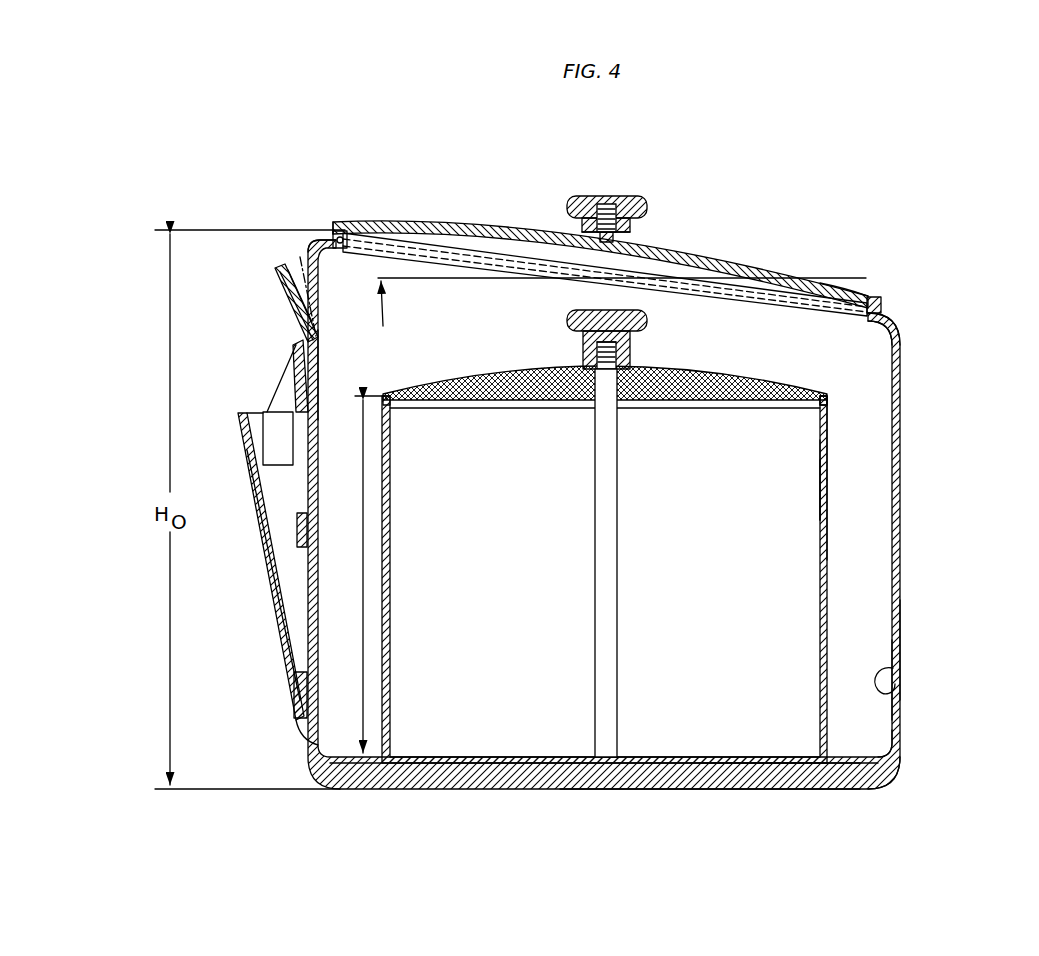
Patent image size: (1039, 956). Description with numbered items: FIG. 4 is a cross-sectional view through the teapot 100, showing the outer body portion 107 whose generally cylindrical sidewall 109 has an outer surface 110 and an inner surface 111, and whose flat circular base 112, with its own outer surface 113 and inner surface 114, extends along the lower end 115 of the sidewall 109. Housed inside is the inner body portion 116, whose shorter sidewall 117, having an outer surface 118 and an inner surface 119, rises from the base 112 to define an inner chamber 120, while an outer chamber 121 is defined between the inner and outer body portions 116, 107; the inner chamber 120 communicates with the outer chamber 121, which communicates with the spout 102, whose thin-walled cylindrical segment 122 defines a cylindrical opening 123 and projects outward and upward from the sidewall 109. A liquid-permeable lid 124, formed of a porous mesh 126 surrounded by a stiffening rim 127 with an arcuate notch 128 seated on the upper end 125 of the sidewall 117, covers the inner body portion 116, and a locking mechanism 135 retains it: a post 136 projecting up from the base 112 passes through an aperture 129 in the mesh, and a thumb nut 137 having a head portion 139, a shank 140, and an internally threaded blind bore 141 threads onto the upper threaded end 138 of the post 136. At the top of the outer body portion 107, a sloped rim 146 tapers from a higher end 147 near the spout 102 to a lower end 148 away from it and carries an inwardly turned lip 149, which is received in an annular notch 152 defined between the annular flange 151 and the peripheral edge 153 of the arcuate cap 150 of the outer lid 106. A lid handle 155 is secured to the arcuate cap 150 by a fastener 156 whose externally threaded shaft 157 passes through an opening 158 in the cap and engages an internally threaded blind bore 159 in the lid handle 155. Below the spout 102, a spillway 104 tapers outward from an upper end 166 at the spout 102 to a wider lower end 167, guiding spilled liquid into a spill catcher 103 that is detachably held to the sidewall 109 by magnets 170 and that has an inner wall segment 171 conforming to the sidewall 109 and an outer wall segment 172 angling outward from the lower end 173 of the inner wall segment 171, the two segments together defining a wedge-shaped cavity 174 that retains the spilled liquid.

The teapot 100 is at (251, 156).
The spout 102 is at (290, 267).
The spill catcher 103 is at (249, 504).
The spillway 104 is at (297, 350).
The outer lid 106 is at (773, 271).
The outer body portion 107 is at (912, 412).
The sidewall 109 is at (900, 651).
The outer surface 110 is at (903, 675).
The inner surface 111 is at (898, 698).
The base 112 is at (838, 780).
The outer surface 113 is at (699, 792).
The inner surface 114 is at (763, 762).
The lower end 115 is at (893, 757).
The inner body portion 116 is at (834, 448).
The sidewall 117 is at (826, 478).
The outer surface 118 is at (829, 515).
The inner surface 119 is at (820, 492).
The inner chamber 120 is at (658, 522).
The outer chamber 121 is at (447, 324).
The cylindrical segment 122 is at (290, 291).
The cylindrical opening 123 is at (297, 258).
The liquid-permeable lid 124 is at (605, 367).
The upper end 125 is at (829, 432).
The porous mesh 126 is at (322, 373).
The stiffening rim 127 is at (826, 406).
The arcuate notch 128 is at (389, 407).
The aperture 129 is at (627, 403).
The locking mechanism 135 is at (659, 519).
The post 136 is at (616, 645).
The thumb nut 137 is at (603, 312).
The upper threaded end 138 is at (592, 410).
The head portion 139 is at (646, 314).
The shank 140 is at (618, 345).
The internally threaded blind bore 141 is at (618, 356).
The sloped rim 146 is at (851, 296).
The higher end 147 is at (389, 243).
The lower end 148 is at (876, 300).
The inwardly turned lip 149 is at (880, 314).
The arcuate cap 150 is at (584, 219).
The annular flange 151 is at (338, 231).
The annular notch 152 is at (318, 240).
The peripheral edge 153 is at (320, 234).
The lid handle 155 is at (616, 173).
The fastener 156 is at (597, 238).
The externally threaded shaft 157 is at (630, 204).
The opening 158 is at (632, 243).
The internally threaded blind bore 159 is at (653, 222).
The upper end 166 is at (300, 311).
The lower end 167 is at (263, 443).
The magnets 170 is at (299, 531).
The inner wall segment 171 is at (298, 628).
The outer wall segment 172 is at (277, 620).
The lower end 173 is at (303, 722).
The wedge-shaped cavity 174 is at (251, 413).